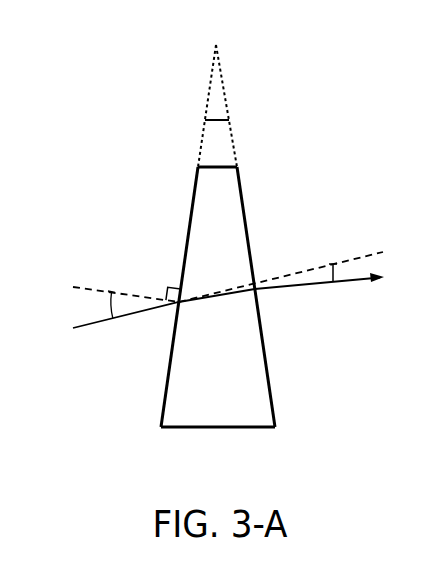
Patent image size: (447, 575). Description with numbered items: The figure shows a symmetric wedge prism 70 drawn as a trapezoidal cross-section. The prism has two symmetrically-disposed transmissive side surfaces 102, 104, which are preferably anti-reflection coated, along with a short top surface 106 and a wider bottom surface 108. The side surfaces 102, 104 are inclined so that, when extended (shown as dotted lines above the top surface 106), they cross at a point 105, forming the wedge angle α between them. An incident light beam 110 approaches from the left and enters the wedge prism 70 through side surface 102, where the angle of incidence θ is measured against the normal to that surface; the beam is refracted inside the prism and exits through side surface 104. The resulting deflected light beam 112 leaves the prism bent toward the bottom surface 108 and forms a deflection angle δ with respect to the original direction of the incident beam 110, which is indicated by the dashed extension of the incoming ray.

The wedge prism 70 is at (103, 232).
The transmissive side surface 102 is at (165, 398).
The transmissive side surface 104 is at (271, 398).
The point 105 is at (216, 42).
The top surface 106 is at (242, 195).
The bottom surface 108 is at (218, 428).
The incident light beam 110 is at (127, 316).
The deflected light beam 112 is at (340, 283).